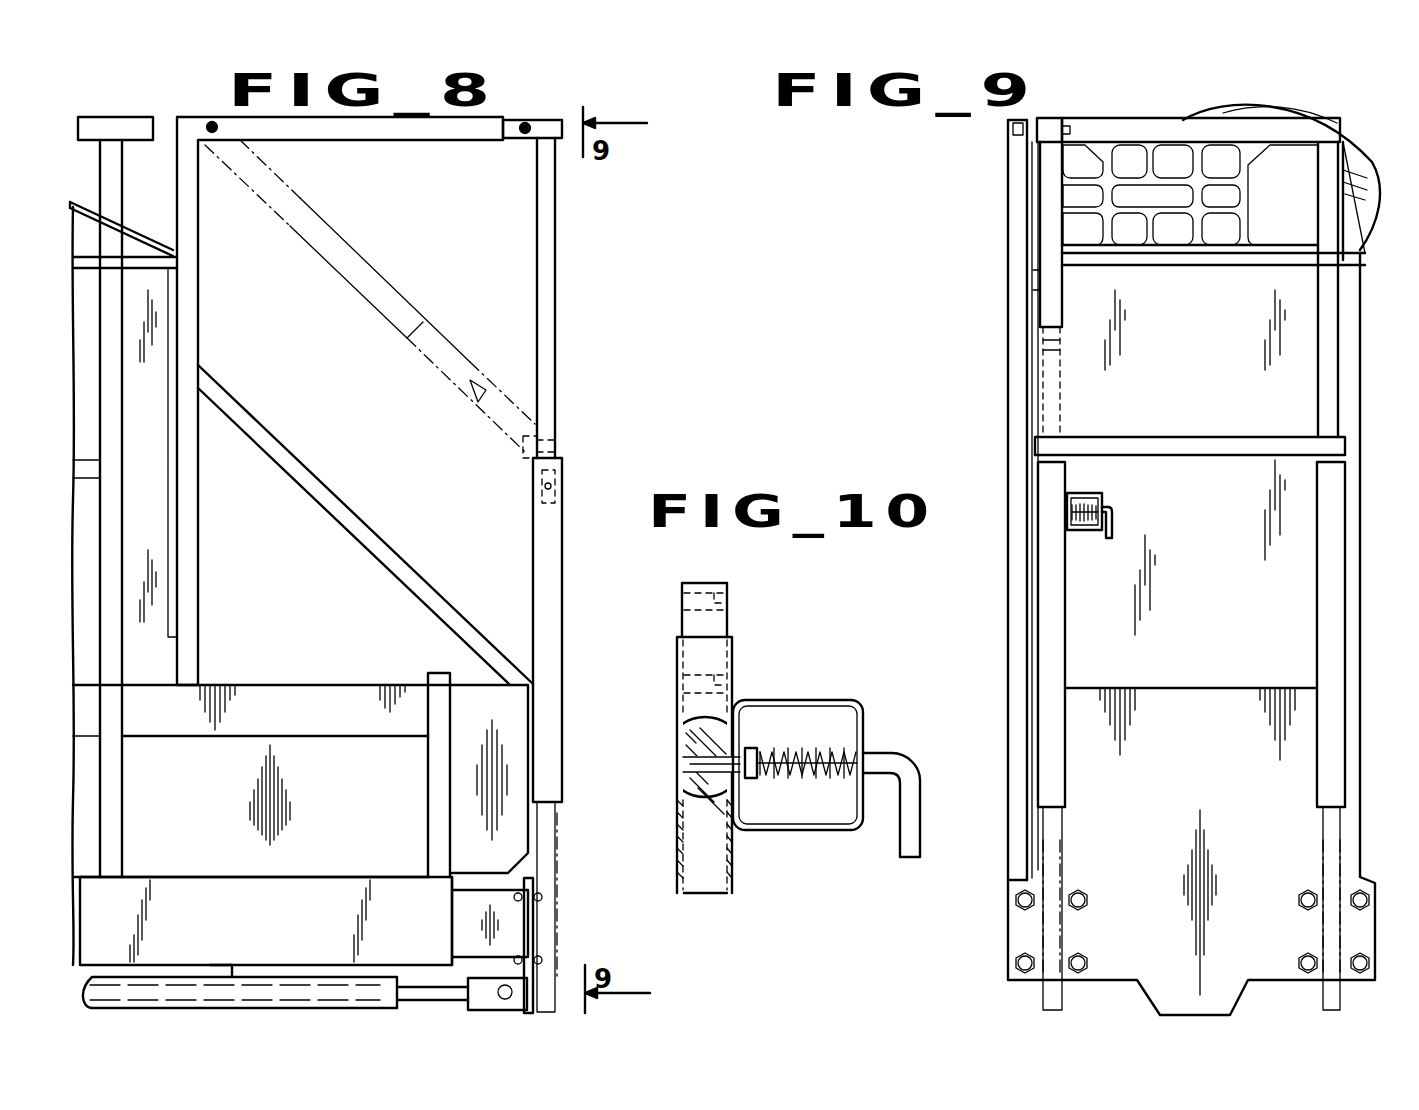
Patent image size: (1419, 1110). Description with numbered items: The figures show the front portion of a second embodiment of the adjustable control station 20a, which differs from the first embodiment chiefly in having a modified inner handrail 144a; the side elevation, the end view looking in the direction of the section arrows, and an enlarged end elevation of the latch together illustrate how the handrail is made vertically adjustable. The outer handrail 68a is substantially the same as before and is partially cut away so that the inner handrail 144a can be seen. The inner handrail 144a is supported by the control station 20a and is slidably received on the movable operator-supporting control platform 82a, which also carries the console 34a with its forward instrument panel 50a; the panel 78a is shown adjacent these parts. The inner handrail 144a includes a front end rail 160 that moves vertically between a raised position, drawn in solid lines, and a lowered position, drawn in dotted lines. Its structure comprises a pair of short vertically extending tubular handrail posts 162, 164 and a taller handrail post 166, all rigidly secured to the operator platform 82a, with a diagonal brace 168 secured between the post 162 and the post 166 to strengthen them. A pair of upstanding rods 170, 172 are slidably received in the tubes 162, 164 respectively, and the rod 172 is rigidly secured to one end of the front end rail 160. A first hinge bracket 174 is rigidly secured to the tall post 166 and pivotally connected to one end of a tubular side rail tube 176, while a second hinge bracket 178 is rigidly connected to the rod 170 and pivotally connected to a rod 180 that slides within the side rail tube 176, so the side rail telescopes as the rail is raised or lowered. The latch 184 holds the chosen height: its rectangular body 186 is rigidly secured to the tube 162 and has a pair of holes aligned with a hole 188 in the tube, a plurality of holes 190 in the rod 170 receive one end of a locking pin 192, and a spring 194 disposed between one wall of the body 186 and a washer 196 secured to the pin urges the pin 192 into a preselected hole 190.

In FIG. 8, the adjustable control station 20a is at (622, 260).
In FIG. 9, the adjustable control station 20a is at (1379, 373).
In FIG. 8, the console 34a is at (150, 510).
In FIG. 9, the console 34a is at (1023, 500).
In FIG. 8, the forward instrument panel 50a is at (165, 236).
In FIG. 9, the forward instrument panel 50a is at (1173, 235).
In FIG. 8, the outer handrail 68a is at (140, 125).
In FIG. 8, the panel 78a is at (308, 680).
In FIG. 9, the panel 78a is at (1160, 684).
In FIG. 8, the movable operators supporting control platform 82a is at (246, 675).
In FIG. 9, the movable operators supporting control platform 82a is at (1212, 686).
In FIG. 8, the inner handrail 144a is at (542, 131).
In FIG. 9, the inner handrail 144a is at (1139, 120).
In FIG. 8, the front end rail 160 is at (560, 128).
In FIG. 9, the front end rail 160 is at (1300, 130).
In FIG. 8, the tubular handrail post 162 is at (546, 546).
In FIG. 10, the tubular handrail post 162 is at (732, 650).
In FIG. 9, the tubular handrail post 162 is at (1055, 603).
In FIG. 9, the tubular handrail post 164 is at (1333, 605).
In FIG. 8, the taller handrail post 166 is at (200, 345).
In FIG. 8, the diagonal brace 168 is at (325, 490).
In FIG. 8, the upstanding rod 170 is at (550, 334).
In FIG. 10, the upstanding rod 170 is at (715, 625).
In FIG. 9, the upstanding rod 170 is at (1062, 412).
In FIG. 9, the upstanding rod 172 is at (1326, 366).
In FIG. 8, the first hinge bracket 174 is at (212, 140).
In FIG. 8, the tubular side rail tube 176 is at (326, 226).
In FIG. 9, the tubular side rail tube 176 is at (1033, 277).
In FIG. 8, the second hinge bracket 178 is at (553, 168).
In FIG. 9, the second hinge bracket 178 is at (1052, 125).
In FIG. 9, the rod 180 is at (1033, 388).
In FIG. 8, the latch 184 is at (540, 484).
In FIG. 10, the latch 184 is at (835, 745).
In FIG. 9, the latch 184 is at (1114, 491).
In FIG. 10, the rectangular body 186 is at (812, 700).
In FIG. 10, the hole 188 is at (708, 800).
In FIG. 10, the holes 190 is at (735, 600).
In FIG. 10, the locking pin 192 is at (898, 763).
In FIG. 9, the locking pin 192 is at (1113, 522).
In FIG. 10, the spring 194 is at (768, 760).
In FIG. 10, the washer 196 is at (748, 775).